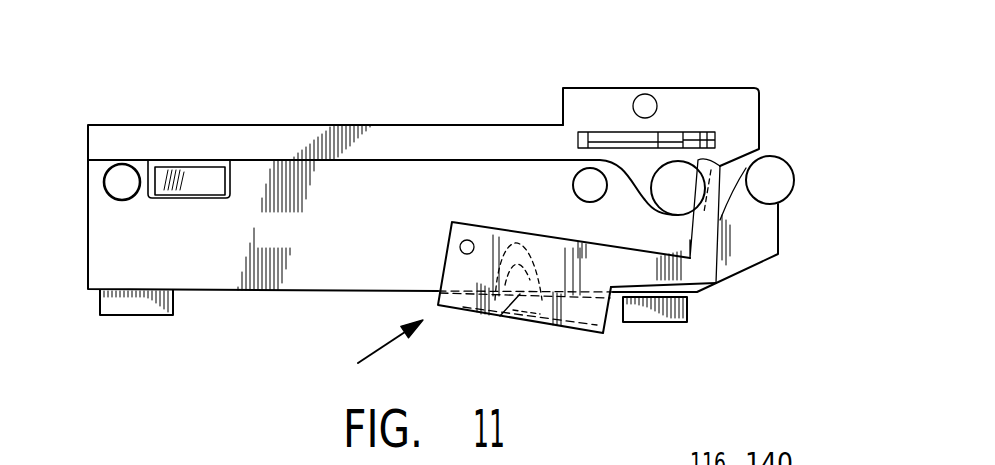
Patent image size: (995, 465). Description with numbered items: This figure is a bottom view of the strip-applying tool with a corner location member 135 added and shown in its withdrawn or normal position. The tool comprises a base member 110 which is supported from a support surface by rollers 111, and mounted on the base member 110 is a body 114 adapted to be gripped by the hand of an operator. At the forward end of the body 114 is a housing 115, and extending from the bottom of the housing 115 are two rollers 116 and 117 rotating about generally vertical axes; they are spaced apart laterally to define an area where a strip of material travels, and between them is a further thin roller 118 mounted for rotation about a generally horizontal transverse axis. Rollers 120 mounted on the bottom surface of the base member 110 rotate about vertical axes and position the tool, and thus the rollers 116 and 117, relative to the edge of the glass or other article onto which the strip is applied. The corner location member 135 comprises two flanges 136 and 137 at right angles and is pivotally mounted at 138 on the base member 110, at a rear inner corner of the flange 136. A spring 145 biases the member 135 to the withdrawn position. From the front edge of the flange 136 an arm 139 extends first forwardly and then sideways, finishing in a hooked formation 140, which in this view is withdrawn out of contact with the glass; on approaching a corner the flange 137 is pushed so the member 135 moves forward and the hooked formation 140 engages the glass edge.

The base member 110 is at (300, 243).
The rollers 111 is at (207, 182).
The body 114 is at (407, 140).
The housing 115 is at (703, 100).
The roller 116 is at (646, 94).
The roller 117 is at (721, 166).
The thin roller 118 is at (714, 138).
The rollers 120 is at (118, 183).
The corner location member 135 is at (361, 353).
The flange 136 is at (452, 268).
The flange 137 is at (502, 313).
The pivot 138 is at (468, 240).
The arm 139 is at (641, 272).
The hooked formation 140 is at (761, 150).
The spring 145 is at (477, 313).